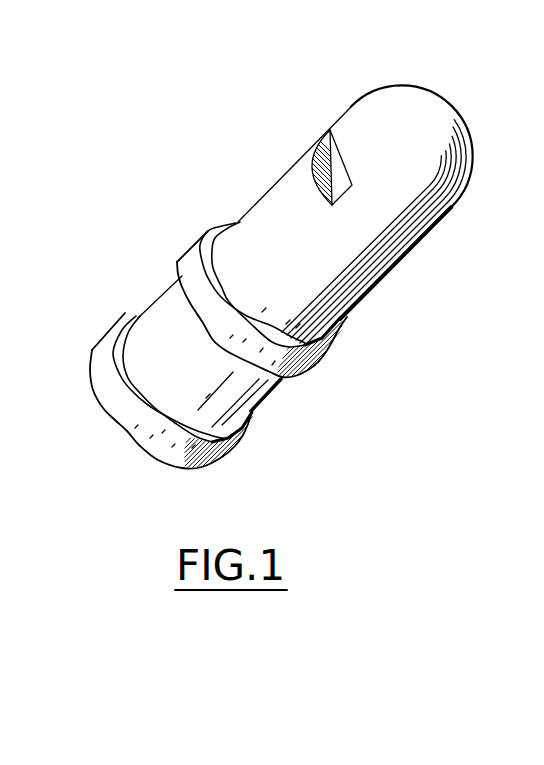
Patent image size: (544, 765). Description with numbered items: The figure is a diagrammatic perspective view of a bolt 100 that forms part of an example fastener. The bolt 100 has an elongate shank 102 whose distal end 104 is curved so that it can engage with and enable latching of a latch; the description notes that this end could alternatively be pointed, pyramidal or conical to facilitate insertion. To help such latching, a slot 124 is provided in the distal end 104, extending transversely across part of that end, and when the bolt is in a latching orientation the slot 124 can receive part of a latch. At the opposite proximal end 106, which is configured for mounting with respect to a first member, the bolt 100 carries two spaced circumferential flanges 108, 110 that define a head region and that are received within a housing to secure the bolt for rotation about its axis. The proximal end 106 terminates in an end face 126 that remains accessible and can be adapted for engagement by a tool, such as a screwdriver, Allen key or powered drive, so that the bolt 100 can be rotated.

The bolt 100 is at (401, 291).
The elongate shank 102 is at (258, 236).
The distal end 104 is at (432, 97).
The proximal end 106 is at (259, 413).
The circumferential flange 108 is at (303, 369).
The circumferential flange 110 is at (222, 467).
The slot 124 is at (328, 137).
The end face 126 is at (133, 436).